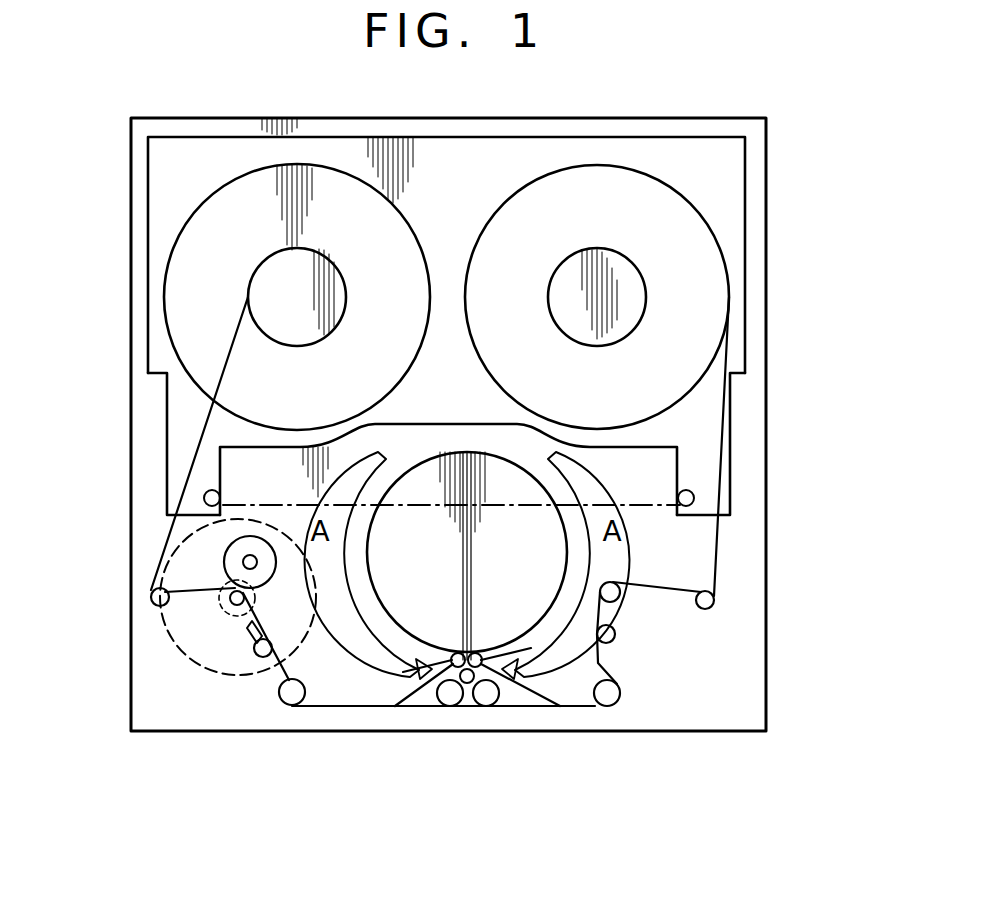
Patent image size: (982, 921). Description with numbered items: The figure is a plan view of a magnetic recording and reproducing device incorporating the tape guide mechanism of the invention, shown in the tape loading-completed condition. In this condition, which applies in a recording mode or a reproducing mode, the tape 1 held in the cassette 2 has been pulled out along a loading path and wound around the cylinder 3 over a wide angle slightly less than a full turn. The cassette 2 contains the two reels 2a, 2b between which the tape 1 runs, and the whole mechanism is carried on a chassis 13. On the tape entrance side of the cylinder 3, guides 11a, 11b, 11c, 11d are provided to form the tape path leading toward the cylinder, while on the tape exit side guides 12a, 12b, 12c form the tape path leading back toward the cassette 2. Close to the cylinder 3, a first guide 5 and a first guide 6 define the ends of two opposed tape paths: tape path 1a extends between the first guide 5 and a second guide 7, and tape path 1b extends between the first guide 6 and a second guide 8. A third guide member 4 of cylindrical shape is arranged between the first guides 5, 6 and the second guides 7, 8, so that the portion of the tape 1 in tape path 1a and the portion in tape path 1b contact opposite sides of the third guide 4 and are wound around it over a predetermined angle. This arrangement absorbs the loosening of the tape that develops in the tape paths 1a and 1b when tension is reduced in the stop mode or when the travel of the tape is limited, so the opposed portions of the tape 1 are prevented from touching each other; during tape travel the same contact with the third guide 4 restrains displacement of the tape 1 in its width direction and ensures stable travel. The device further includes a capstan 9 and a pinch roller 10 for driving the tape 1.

The tape 1 is at (717, 543).
The tape path 1a is at (490, 675).
The tape path 1b is at (395, 706).
The cassette 2 is at (510, 157).
The take-up reel 2a is at (707, 245).
The supply reel 2b is at (178, 283).
The cylinder 3 is at (538, 618).
The third guide member 4 is at (466, 684).
The first guide 5 is at (533, 684).
The first guide 6 is at (417, 672).
The second guide 7 is at (488, 707).
The second guide 8 is at (450, 707).
The capstan 9 is at (235, 615).
The pinch roller 10 is at (240, 565).
The guide 11a is at (712, 610).
The guide 11b is at (617, 600).
The guide 11c is at (613, 641).
The guide 11d is at (617, 704).
The guide 12a is at (291, 706).
The guide 12b is at (254, 652).
The guide 12c is at (151, 598).
The chassis 13 is at (757, 710).